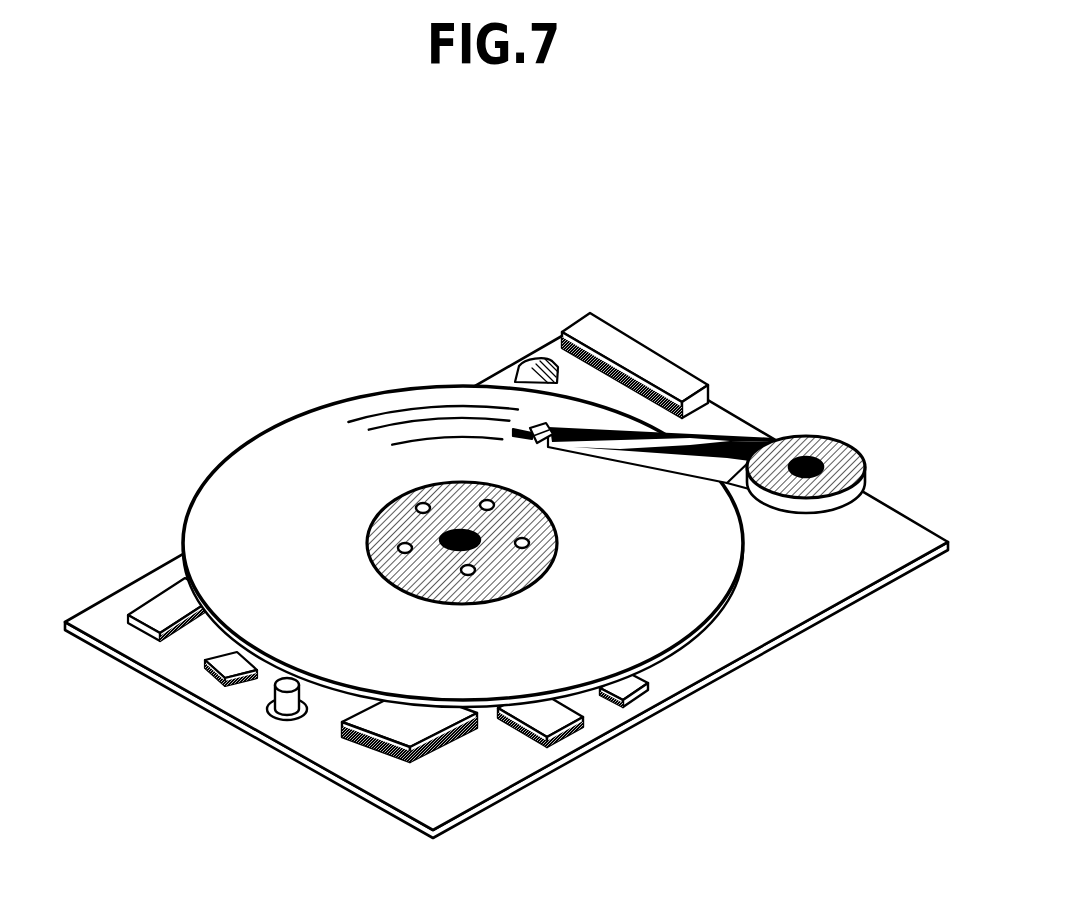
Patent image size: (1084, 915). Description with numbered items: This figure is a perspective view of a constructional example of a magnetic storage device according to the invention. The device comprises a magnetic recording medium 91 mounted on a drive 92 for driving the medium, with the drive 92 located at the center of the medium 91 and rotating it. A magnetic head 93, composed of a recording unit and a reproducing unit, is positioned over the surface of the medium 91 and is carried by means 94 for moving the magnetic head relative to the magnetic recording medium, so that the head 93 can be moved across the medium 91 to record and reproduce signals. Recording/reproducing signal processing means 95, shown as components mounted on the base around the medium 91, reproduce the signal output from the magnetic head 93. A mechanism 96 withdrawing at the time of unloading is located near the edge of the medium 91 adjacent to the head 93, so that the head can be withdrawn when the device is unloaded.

The magnetic recording medium 91 is at (245, 550).
The drive 92 is at (402, 520).
The magnetic head 93 is at (547, 423).
The means for moving the magnetic head 94 is at (834, 447).
The recording/reproducing signal processing means 95 is at (565, 707).
The mechanism withdrawing at the time of unloading 96 is at (533, 370).